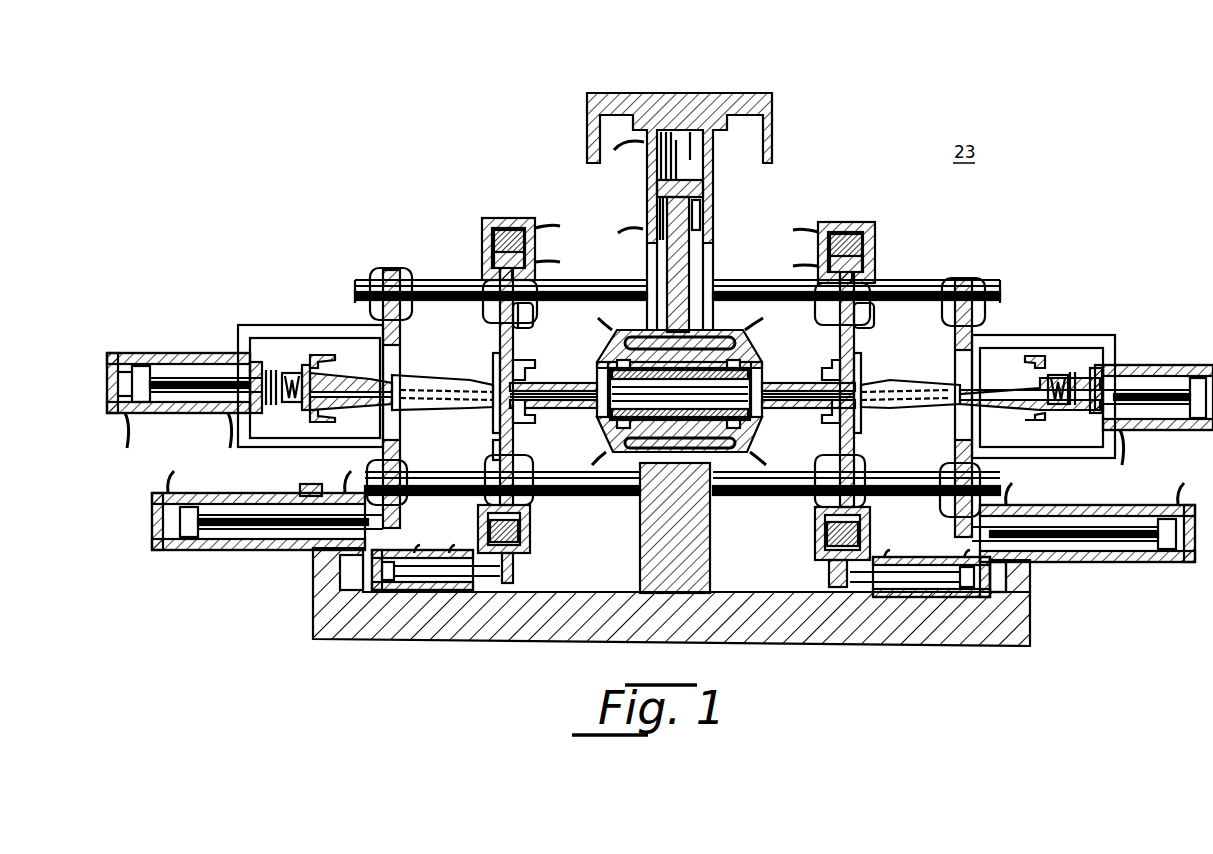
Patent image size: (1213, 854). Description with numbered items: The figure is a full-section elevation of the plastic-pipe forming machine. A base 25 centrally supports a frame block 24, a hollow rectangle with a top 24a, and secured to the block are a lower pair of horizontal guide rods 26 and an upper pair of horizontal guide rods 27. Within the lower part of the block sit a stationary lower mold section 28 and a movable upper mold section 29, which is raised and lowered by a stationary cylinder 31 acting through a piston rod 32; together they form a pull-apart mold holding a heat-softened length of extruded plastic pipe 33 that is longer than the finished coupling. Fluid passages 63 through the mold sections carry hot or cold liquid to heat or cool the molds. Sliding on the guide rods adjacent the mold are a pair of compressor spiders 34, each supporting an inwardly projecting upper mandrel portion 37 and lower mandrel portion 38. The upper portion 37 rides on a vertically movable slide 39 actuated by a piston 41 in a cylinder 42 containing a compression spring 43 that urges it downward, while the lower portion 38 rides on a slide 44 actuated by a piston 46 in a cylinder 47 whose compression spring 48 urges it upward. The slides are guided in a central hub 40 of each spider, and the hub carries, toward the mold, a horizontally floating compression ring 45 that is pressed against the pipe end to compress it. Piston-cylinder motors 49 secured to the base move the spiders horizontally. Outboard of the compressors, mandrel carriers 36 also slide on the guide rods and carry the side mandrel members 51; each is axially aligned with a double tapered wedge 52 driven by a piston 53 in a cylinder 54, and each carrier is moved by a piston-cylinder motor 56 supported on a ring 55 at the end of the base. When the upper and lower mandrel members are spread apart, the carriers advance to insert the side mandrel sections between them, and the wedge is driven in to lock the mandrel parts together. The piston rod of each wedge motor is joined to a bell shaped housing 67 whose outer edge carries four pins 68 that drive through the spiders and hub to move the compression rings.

The frame block 24 is at (640, 554).
The top 24a is at (765, 93).
The base 25 is at (903, 642).
The lower pair of horizontal guide rods 26 is at (440, 462).
The upper pair of horizontal guide rods 27 is at (448, 302).
The stationary lower mold section 28 is at (747, 441).
The movable upper mold section 29 is at (748, 334).
The stationary cylinder 31 is at (646, 186).
The piston rod 32 is at (690, 258).
The extruded plastic pipe 33 is at (656, 392).
The compressor spiders 34 is at (500, 318).
The mandrel carriers 36 is at (392, 270).
The upper mandrel portion 37 is at (580, 383).
The lower mandrel portion 38 is at (578, 408).
The vertically movable slide 39 is at (525, 328).
The central hub 40 is at (490, 422).
The piston 41 is at (486, 253).
The cylinder 42 is at (508, 218).
The compression spring 43 is at (492, 231).
The vertically movable slide 44 is at (495, 440).
The compression ring 45 is at (533, 361).
The piston 46 is at (530, 516).
The cylinder 47 is at (516, 560).
The compression spring 48 is at (518, 540).
The piston-cylinder motors 49 is at (430, 550).
The side mandrel members 51 is at (450, 376).
The double tapered wedge 52 is at (360, 382).
The piston 53 is at (215, 362).
The cylinder 54 is at (165, 353).
The ring 55 is at (304, 486).
The piston-cylinder motor 56 is at (242, 493).
The fluid passages 63 is at (612, 330).
The bell shaped housing 67 is at (274, 362).
The pins 68 is at (332, 358).